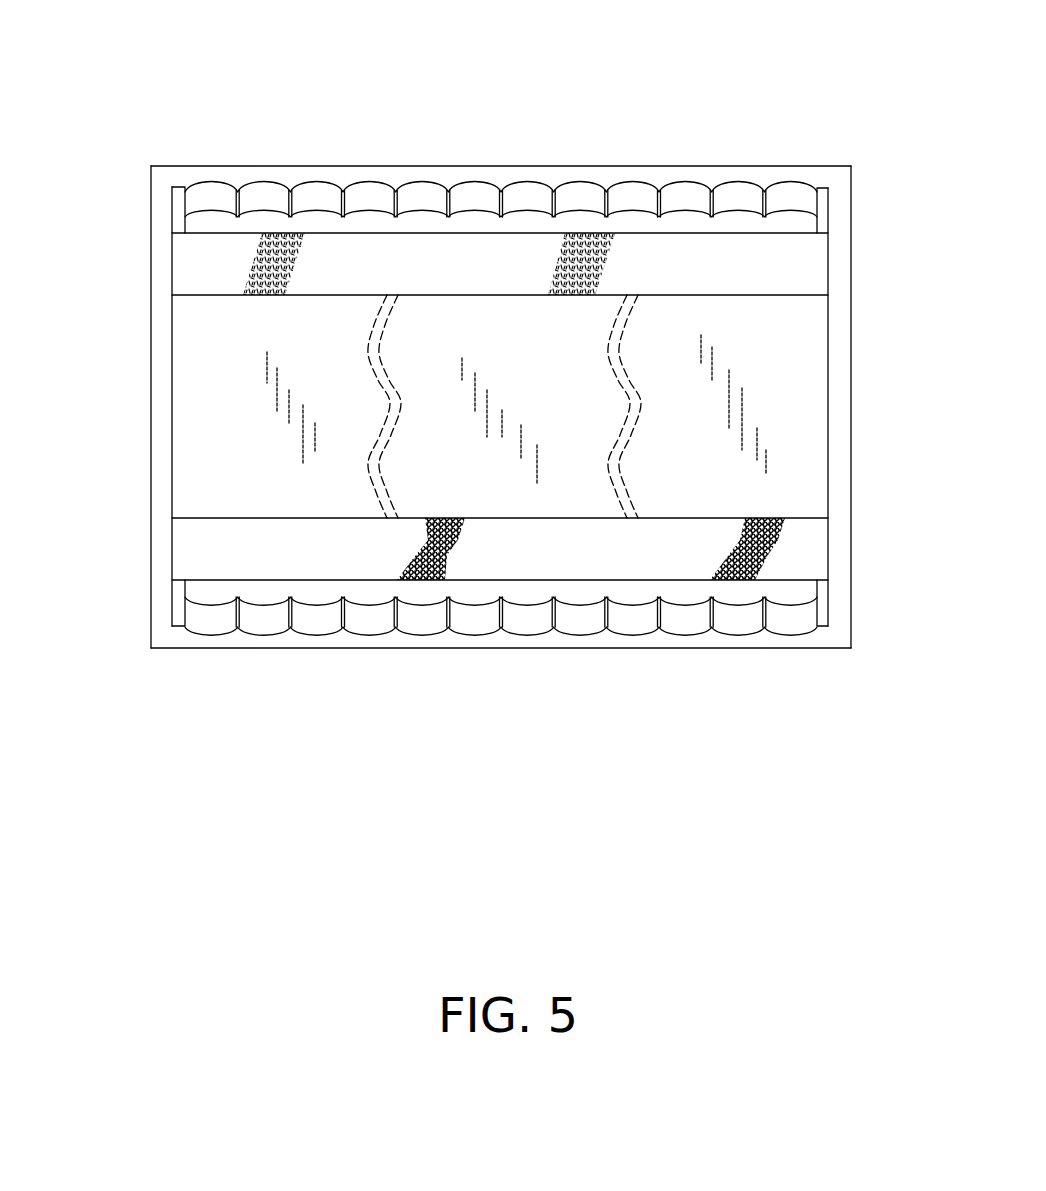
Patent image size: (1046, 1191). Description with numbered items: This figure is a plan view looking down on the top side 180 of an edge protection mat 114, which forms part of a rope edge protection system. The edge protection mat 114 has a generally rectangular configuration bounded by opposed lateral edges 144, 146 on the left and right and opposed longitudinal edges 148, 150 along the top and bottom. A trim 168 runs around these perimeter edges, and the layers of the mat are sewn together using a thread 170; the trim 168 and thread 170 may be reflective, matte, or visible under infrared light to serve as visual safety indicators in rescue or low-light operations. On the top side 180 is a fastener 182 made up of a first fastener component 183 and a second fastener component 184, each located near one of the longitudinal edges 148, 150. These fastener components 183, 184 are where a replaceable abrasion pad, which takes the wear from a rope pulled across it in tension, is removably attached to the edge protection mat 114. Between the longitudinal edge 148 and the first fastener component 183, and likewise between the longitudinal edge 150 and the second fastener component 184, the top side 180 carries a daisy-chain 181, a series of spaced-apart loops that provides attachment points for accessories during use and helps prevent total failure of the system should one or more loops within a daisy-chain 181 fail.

The edge protection mat 114 is at (820, 120).
The lateral edge 144 is at (151, 405).
The lateral edge 146 is at (851, 408).
The longitudinal edge 148 is at (530, 166).
The longitudinal edge 150 is at (358, 648).
The trim 168 is at (255, 166).
The thread 170 is at (392, 377).
The top side 180 is at (523, 347).
The daisy-chain 181 is at (193, 200).
The fastener 182 is at (243, 297).
The first fastener component 183 is at (797, 259).
The second fastener component 184 is at (797, 557).